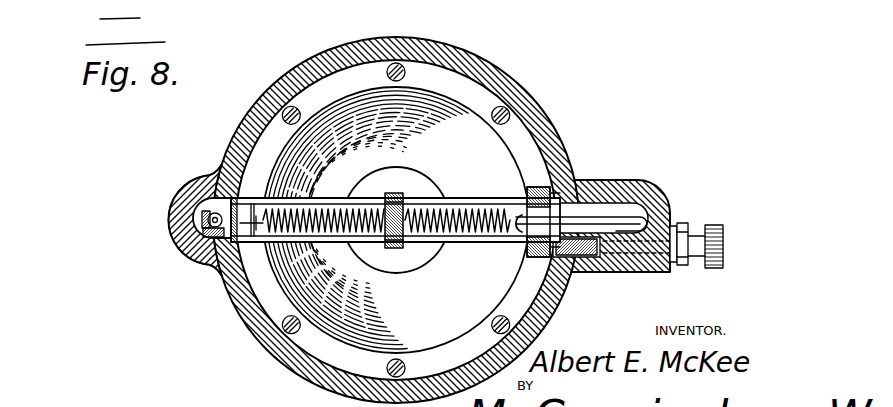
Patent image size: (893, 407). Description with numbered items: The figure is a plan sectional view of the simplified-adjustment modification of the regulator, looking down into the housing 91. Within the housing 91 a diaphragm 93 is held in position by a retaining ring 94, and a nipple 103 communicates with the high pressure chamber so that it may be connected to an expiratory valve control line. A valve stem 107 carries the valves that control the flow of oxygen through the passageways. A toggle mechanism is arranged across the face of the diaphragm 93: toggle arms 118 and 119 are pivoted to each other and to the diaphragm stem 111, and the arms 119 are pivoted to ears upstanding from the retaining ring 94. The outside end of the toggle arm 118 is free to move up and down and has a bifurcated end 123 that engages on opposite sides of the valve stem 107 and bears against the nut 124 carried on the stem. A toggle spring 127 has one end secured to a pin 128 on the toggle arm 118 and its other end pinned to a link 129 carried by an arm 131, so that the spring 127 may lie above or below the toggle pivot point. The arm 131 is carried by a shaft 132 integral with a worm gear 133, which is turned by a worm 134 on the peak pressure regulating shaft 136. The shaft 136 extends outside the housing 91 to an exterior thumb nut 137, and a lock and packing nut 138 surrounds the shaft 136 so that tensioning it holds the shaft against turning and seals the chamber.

The housing 91 is at (480, 60).
The diaphragm 93 is at (487, 157).
The retaining ring 94 is at (505, 99).
The nipple 103 is at (120, 10).
The valve stem 107 is at (198, 236).
The diaphragm stem 111 is at (408, 214).
The toggle arm 118 is at (387, 241).
The toggle arm 119 is at (478, 240).
The bifurcated end 123 is at (202, 204).
The nut 124 is at (228, 200).
The toggle spring 127 is at (485, 188).
The pin 128 is at (260, 243).
The link 129 is at (618, 223).
The arm 131 is at (655, 199).
The shaft 132 is at (566, 188).
The worm gear 133 is at (577, 263).
The worm 134 is at (595, 274).
The peak pressure regulating shaft 136 is at (660, 247).
The thumb nut 137 is at (707, 237).
The lock and packing nut 138 is at (689, 232).